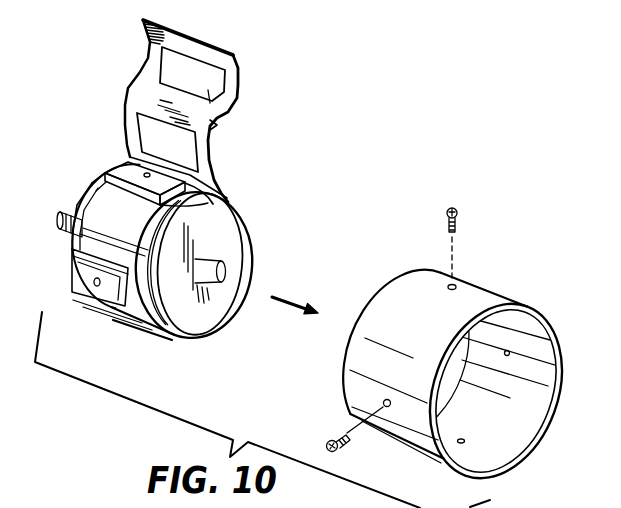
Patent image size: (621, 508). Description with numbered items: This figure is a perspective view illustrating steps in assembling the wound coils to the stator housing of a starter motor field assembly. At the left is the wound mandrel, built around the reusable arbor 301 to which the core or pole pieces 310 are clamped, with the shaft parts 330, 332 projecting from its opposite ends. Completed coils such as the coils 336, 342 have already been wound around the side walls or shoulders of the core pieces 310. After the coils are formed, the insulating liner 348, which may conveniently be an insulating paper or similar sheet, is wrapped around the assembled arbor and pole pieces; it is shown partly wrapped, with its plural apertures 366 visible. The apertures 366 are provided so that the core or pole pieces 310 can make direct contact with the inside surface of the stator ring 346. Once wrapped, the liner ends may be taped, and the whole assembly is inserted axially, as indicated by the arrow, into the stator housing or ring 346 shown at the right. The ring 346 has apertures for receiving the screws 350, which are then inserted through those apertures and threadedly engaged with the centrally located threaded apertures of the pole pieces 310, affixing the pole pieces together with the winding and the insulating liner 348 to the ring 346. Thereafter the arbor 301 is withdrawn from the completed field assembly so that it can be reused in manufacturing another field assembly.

The arbor 301 is at (182, 322).
The core piece 310 is at (105, 272).
The shaft part 330 is at (228, 268).
The shaft part 332 is at (65, 213).
The coil 336 is at (98, 315).
The coil 342 is at (99, 166).
The stator housing or ring 346 is at (360, 366).
The insulating liner 348 is at (238, 78).
The screw 350 is at (446, 224).
The aperture 366 is at (193, 140).